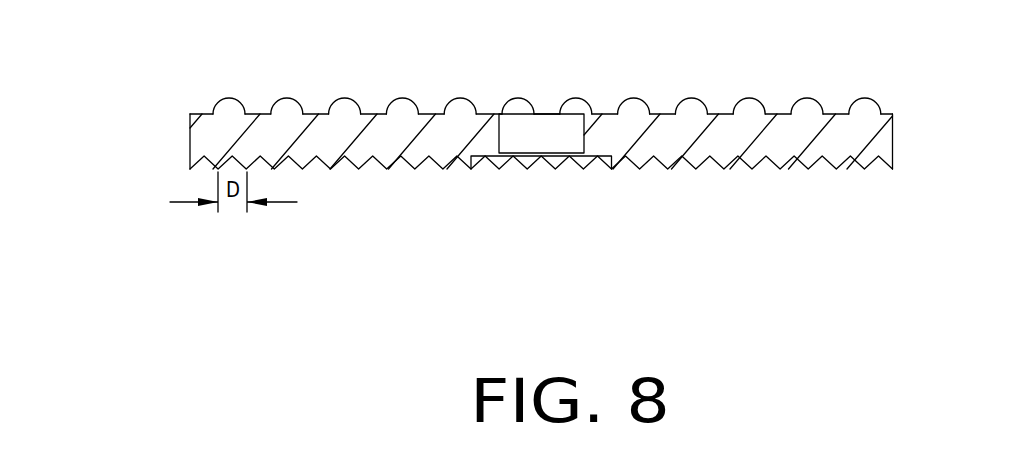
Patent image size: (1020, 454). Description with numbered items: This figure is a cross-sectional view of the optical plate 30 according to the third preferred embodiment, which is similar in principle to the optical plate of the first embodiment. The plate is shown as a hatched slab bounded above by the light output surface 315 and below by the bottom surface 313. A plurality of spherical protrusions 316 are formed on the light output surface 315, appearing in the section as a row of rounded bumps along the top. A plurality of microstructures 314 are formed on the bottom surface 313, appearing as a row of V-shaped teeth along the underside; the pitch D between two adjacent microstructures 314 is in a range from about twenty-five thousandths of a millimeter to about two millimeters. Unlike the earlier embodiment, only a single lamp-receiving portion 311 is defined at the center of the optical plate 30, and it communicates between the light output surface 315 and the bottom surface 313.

The optical plate 30 is at (178, 70).
The lamp-receiving portion 311 is at (523, 127).
The bottom surface 313 is at (485, 157).
The microstructures 314 is at (697, 170).
The light output surface 315 is at (783, 115).
The spherical protrusions 316 is at (690, 98).